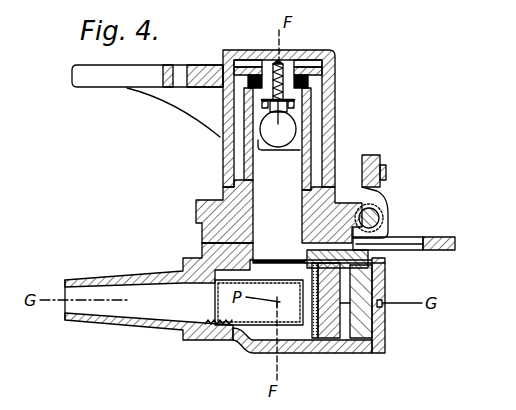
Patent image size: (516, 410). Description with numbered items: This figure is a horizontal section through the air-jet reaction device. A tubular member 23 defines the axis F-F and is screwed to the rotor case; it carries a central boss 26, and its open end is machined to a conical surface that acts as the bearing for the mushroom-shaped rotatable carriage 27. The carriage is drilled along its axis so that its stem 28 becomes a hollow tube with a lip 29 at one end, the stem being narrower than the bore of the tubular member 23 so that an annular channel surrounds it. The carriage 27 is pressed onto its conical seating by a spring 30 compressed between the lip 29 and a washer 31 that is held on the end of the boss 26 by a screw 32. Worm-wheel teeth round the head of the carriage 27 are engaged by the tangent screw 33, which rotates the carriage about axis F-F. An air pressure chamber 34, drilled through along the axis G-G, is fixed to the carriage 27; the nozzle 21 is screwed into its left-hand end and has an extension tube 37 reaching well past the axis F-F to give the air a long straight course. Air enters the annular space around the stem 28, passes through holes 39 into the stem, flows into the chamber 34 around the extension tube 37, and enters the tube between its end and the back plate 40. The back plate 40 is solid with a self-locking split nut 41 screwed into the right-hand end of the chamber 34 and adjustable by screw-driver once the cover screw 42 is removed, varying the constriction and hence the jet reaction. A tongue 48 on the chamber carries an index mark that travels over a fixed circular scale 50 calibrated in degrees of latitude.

The nozzle 21 is at (160, 327).
The tubular member 23 is at (334, 72).
The central boss 26 is at (287, 60).
The rotatable carriage 27 is at (228, 230).
The stem 28 is at (243, 142).
The lip 29 is at (238, 66).
The spring 30 is at (262, 79).
The washer 31 is at (292, 102).
The screw 32 is at (288, 110).
The tangent screw 33 is at (381, 211).
The air pressure chamber 34 is at (252, 354).
The extension tube 37 is at (232, 340).
The holes 39 is at (290, 130).
The back plate 40 is at (337, 340).
The self-locking split nut 41 is at (344, 341).
The cover screw 42 is at (358, 314).
The tongue 48 is at (398, 251).
The fixed circular scale 50 is at (449, 239).